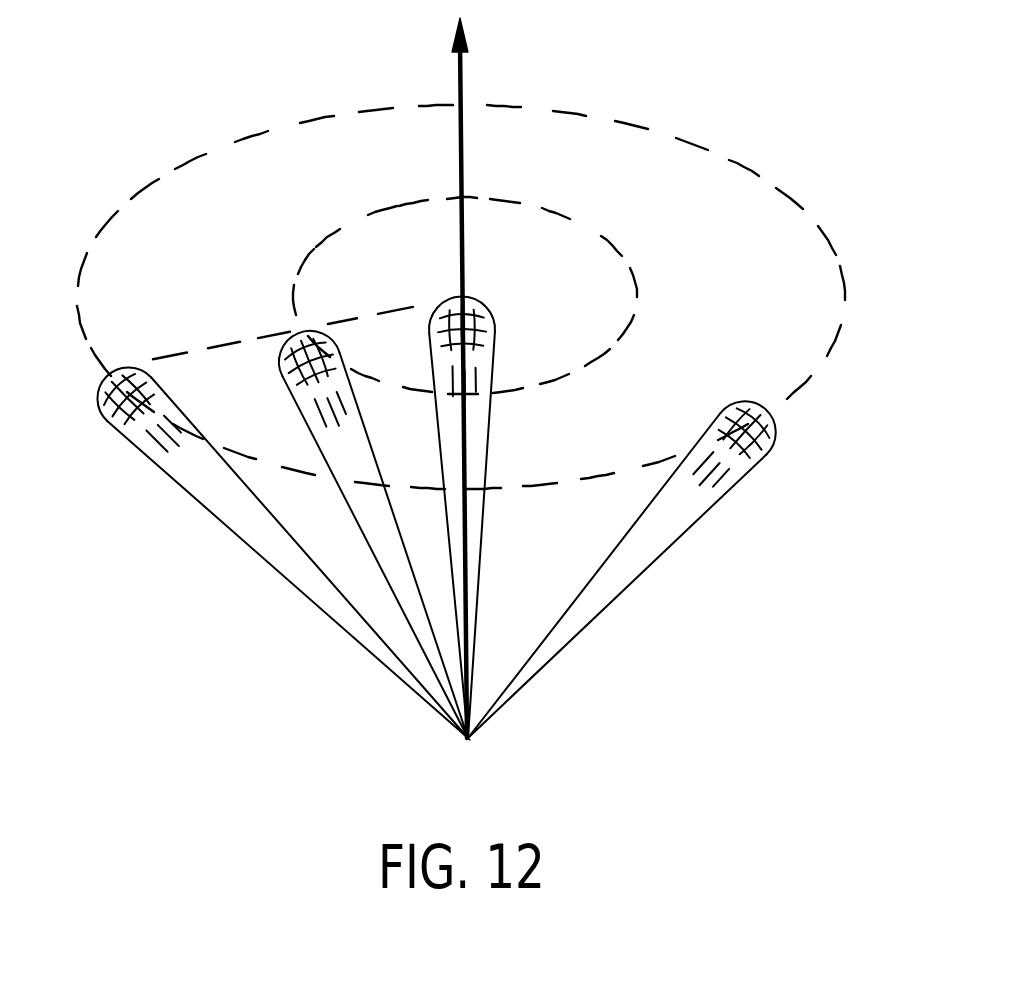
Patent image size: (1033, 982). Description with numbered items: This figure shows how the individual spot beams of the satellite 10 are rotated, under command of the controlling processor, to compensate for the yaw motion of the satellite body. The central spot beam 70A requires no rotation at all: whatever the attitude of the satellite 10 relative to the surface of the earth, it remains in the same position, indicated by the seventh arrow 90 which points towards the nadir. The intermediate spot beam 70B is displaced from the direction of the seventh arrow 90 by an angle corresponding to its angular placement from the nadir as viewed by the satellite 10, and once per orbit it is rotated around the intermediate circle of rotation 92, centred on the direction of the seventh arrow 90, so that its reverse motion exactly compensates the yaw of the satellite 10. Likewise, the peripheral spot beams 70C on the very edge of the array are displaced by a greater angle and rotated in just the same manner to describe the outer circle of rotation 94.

The satellite 10 is at (470, 742).
The seventh arrow 90 is at (461, 68).
The intermediate circle of rotation 92 is at (637, 283).
The outer circle of rotation 94 is at (796, 196).
The central spot beam 70A is at (480, 306).
The intermediate spot beam 70B is at (287, 345).
The peripheral spot beam 70C is at (103, 390).